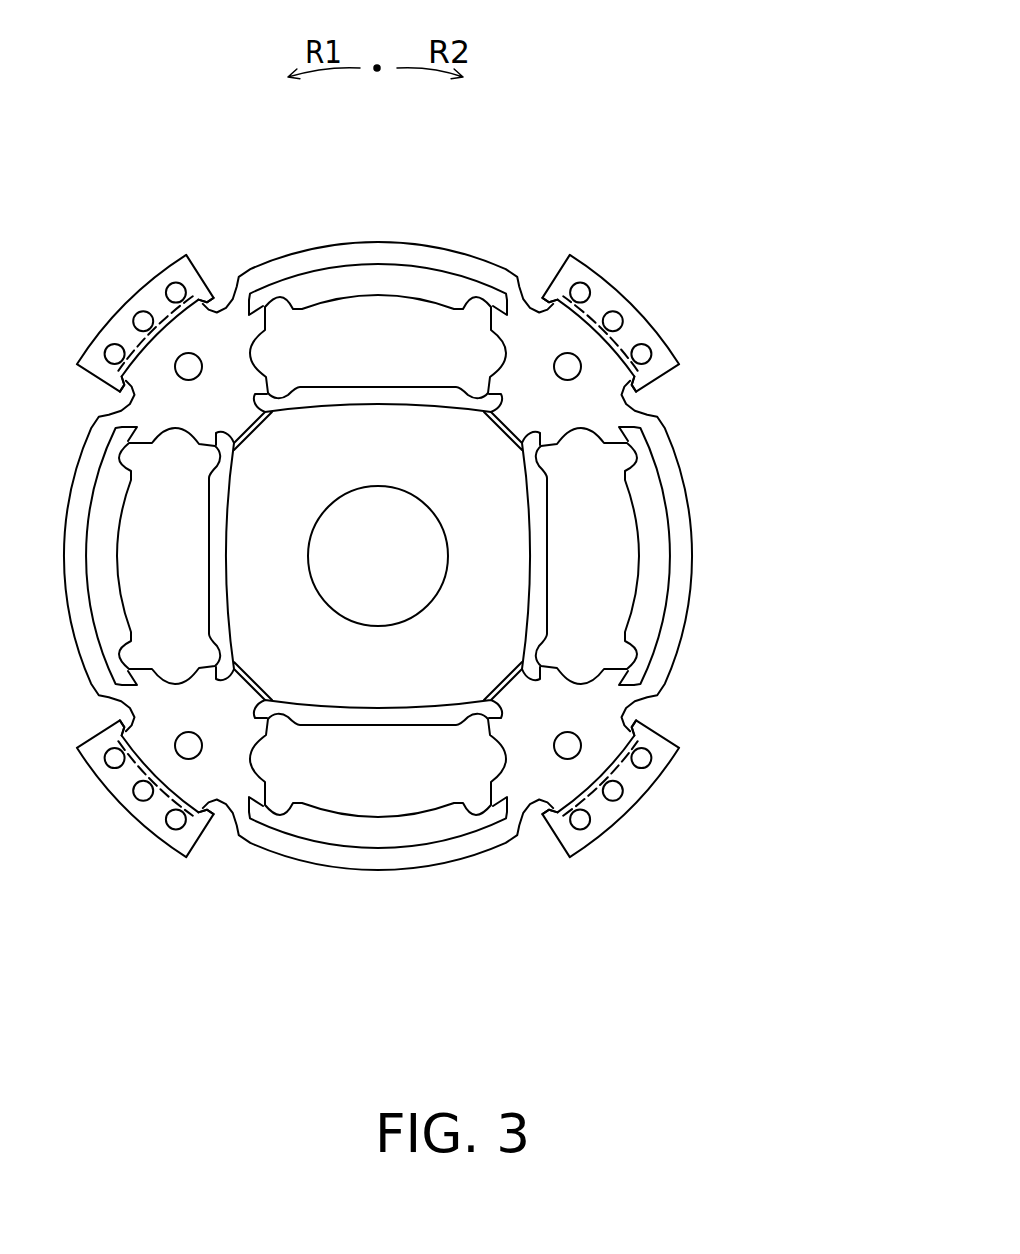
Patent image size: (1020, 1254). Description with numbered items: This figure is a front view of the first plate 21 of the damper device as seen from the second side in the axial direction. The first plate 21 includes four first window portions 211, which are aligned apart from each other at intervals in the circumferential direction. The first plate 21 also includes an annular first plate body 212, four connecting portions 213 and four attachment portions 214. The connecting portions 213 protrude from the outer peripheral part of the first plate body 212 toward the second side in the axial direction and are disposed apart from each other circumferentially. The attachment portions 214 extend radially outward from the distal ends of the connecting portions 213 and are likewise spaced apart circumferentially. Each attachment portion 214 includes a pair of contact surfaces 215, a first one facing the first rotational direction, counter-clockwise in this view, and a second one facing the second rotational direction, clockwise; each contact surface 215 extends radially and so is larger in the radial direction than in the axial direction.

The first plate 21 is at (462, 445).
The first window portion 211 is at (640, 536).
The first plate body 212 is at (678, 528).
The connecting portion 213 is at (580, 319).
The attachment portion 214 is at (673, 362).
The contact surface 215 is at (553, 293).